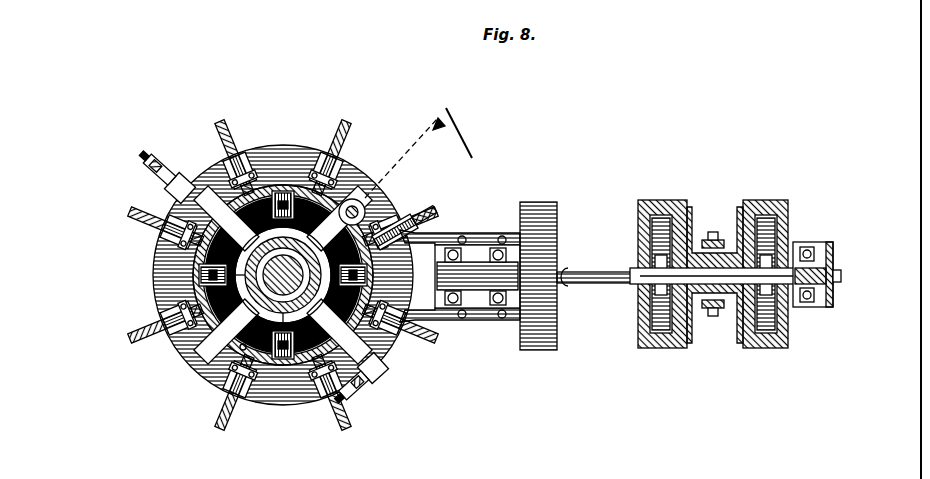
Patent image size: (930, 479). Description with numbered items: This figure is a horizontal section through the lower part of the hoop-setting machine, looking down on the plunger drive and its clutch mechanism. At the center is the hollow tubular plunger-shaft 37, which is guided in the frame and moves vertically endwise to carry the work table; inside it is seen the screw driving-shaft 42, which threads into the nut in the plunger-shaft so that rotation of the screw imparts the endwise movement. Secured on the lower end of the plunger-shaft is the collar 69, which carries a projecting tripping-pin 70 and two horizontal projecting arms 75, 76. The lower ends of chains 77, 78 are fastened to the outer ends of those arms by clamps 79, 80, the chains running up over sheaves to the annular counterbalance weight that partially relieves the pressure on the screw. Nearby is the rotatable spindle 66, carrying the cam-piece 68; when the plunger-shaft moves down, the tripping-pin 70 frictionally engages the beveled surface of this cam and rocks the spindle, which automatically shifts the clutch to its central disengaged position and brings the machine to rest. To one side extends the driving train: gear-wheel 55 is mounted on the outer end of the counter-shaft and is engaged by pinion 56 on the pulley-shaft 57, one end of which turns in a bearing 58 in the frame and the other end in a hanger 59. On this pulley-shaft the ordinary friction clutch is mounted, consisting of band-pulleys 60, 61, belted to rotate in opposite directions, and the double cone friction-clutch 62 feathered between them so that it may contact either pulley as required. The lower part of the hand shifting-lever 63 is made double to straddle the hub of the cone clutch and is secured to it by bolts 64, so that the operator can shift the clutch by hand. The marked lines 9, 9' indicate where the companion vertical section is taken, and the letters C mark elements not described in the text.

The section line 9 is at (302, 265).
The section line 9' is at (263, 379).
The hollow tubular plunger-shaft 37 is at (168, 290).
The screw driving-shaft 42 is at (281, 352).
The gear-wheel 55 is at (545, 351).
The pinion 56 is at (568, 266).
The pulley-shaft 57 is at (612, 272).
The bearing 58 is at (460, 276).
The hanger 59 is at (826, 308).
The band-pulley 60 is at (660, 202).
The band-pulley 61 is at (772, 202).
The double cone friction-clutch 62 is at (740, 212).
The hand shifting-lever 63 is at (712, 232).
The bolts 64 is at (714, 316).
The rotatable spindle 66 is at (358, 200).
The cam-piece 68 is at (400, 220).
The collar 69 is at (240, 350).
The tripping-pin 70 is at (290, 262).
The projecting arm 75 is at (412, 392).
The projecting arm 76 is at (160, 160).
The chain 77 is at (166, 176).
The chain 78 is at (396, 400).
The clamp 79 is at (172, 192).
The clamp 80 is at (372, 369).
The clamping bolt C is at (437, 345).